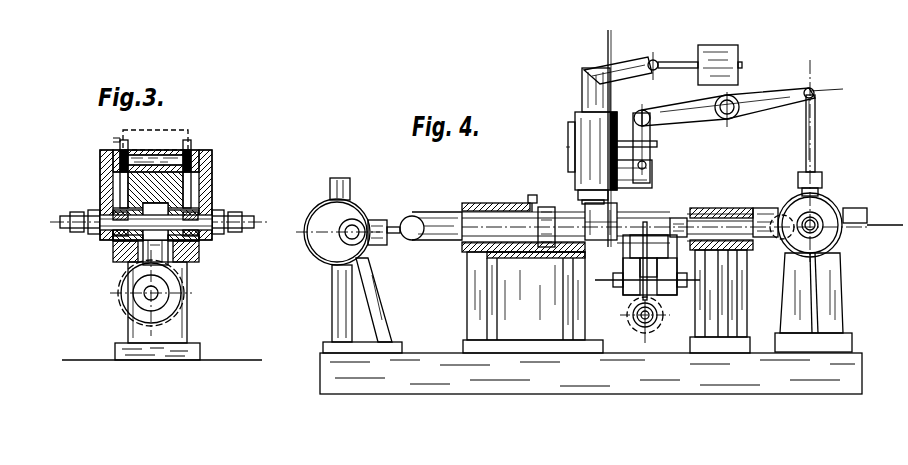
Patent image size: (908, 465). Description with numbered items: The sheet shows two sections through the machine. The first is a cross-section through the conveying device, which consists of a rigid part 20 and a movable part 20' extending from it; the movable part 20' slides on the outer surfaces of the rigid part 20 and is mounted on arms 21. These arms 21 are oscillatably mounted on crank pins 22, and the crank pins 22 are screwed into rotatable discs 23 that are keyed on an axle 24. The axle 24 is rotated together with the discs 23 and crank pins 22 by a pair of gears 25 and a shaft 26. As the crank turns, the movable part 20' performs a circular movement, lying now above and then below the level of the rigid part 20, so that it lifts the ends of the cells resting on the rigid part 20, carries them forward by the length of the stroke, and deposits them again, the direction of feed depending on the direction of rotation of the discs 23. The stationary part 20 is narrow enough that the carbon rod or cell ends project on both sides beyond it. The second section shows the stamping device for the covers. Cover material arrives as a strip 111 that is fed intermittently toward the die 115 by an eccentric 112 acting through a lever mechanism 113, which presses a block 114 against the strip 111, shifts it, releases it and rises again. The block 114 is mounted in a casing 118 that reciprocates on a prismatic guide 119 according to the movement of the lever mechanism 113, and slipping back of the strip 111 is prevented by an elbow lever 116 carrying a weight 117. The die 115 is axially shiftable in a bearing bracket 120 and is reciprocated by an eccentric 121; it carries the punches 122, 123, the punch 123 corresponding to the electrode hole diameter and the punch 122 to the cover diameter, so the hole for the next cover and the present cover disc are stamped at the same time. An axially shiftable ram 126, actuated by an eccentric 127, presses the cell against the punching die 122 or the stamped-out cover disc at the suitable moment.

In FIG. 3, the rigid part 20 is at (156, 175).
In FIG. 3, the movable part 20' is at (160, 165).
In FIG. 3, the arms 21 is at (108, 187).
In FIG. 3, the crank pins 22 is at (104, 215).
In FIG. 3, the rotatable discs 23 is at (120, 258).
In FIG. 3, the axle 24 is at (112, 247).
In FIG. 3, the pair of gears 25 is at (150, 252).
In FIG. 3, the shaft 26 is at (153, 294).
In FIG. 4, the strip 111 is at (612, 48).
In FIG. 4, the eccentric 112 is at (828, 193).
In FIG. 4, the lever mechanism 113 is at (650, 135).
In FIG. 4, the block 114 is at (620, 175).
In FIG. 4, the die 115 is at (548, 207).
In FIG. 4, the elbow lever 116 is at (631, 65).
In FIG. 4, the weight 117 is at (727, 48).
In FIG. 4, the casing 118 is at (577, 117).
In FIG. 4, the prismatic guide 119 is at (583, 92).
In FIG. 4, the bearing bracket 120 is at (478, 284).
In FIG. 4, the eccentric 121 is at (360, 207).
In FIG. 4, the punch 122 is at (618, 268).
In FIG. 4, the punch 123 is at (617, 214).
In FIG. 4, the ram 126 is at (677, 217).
In FIG. 4, the eccentric 127 is at (823, 240).